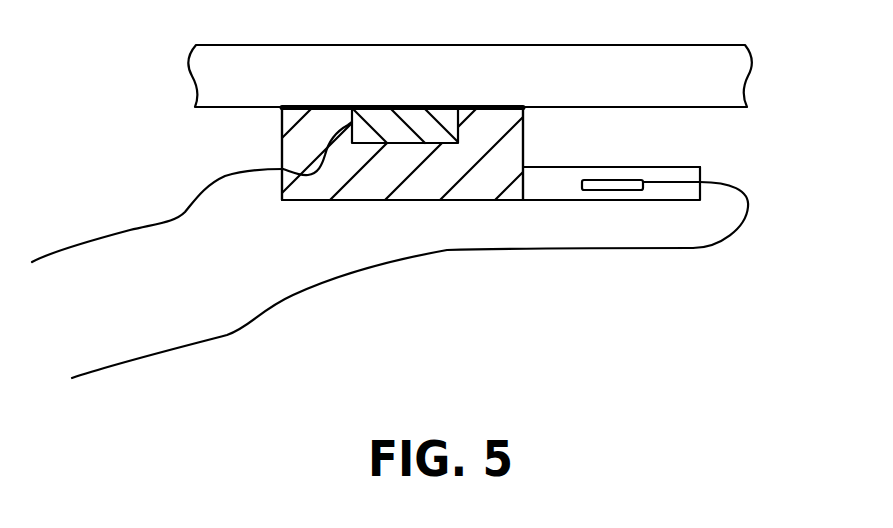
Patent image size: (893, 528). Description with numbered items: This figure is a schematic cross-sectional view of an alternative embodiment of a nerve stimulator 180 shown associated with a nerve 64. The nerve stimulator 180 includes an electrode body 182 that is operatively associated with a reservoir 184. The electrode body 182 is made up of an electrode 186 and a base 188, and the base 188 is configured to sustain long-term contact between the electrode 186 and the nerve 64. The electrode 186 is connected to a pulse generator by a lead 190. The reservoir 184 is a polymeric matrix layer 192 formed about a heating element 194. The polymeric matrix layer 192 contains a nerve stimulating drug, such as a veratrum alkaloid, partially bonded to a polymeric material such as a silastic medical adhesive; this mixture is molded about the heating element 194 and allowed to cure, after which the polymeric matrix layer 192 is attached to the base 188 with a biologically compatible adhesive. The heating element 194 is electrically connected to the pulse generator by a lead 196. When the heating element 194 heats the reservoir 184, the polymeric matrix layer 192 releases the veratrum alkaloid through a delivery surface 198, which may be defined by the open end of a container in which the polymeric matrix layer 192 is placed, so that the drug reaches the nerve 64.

The nerve 64 is at (722, 62).
The nerve stimulator 180 is at (162, 159).
The electrode body 182 is at (318, 206).
The reservoir 184 is at (550, 203).
The electrode 186 is at (412, 117).
The base 188 is at (375, 186).
The lead 190 is at (70, 245).
The polymeric matrix layer 192 is at (653, 203).
The heating element 194 is at (615, 176).
The lead 196 is at (695, 249).
The delivery surface 198 is at (545, 166).